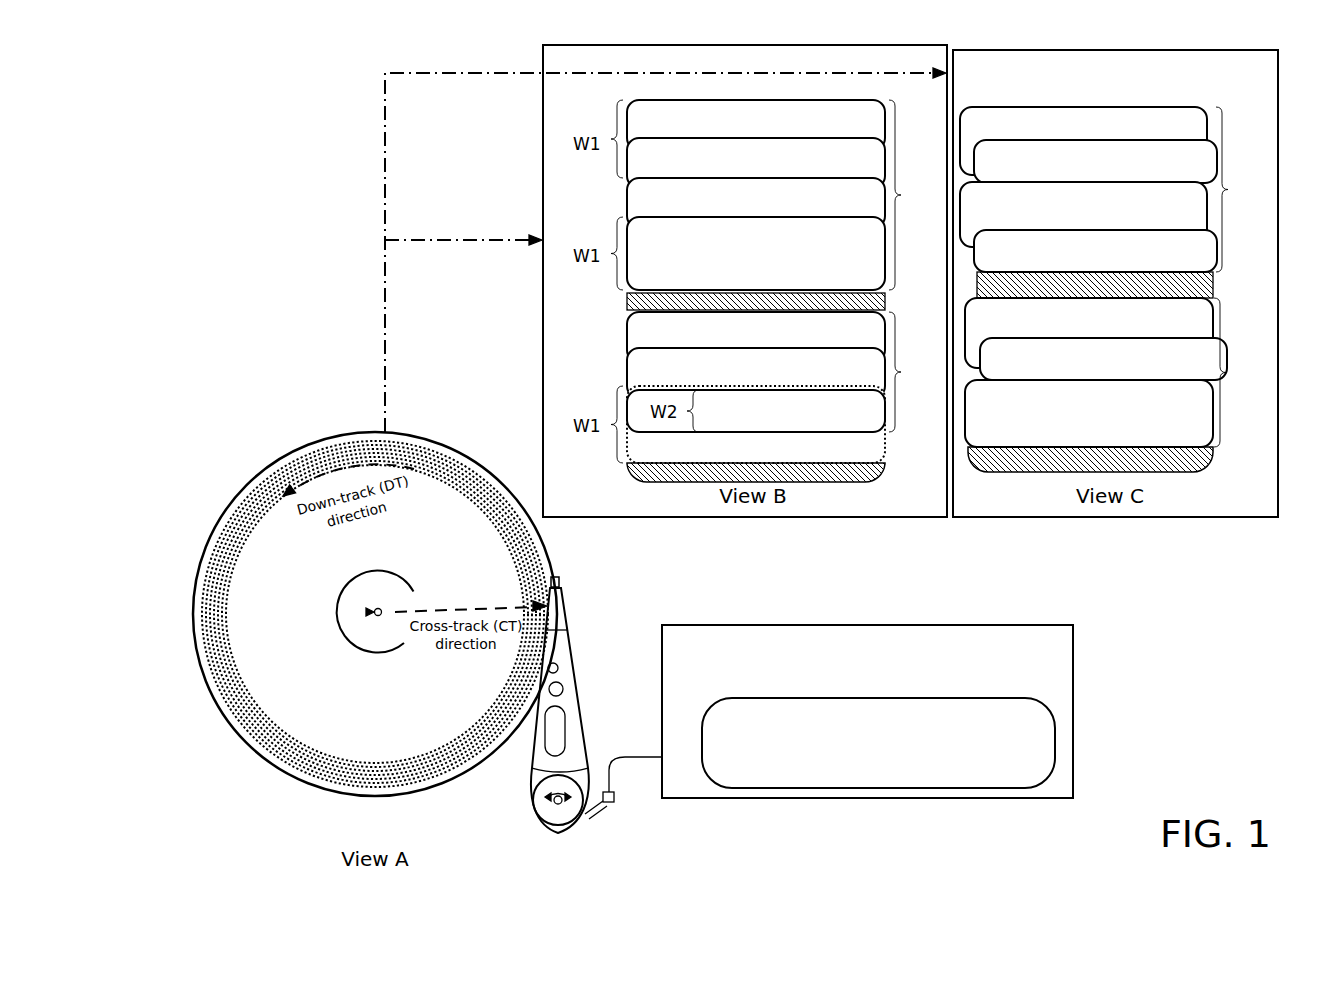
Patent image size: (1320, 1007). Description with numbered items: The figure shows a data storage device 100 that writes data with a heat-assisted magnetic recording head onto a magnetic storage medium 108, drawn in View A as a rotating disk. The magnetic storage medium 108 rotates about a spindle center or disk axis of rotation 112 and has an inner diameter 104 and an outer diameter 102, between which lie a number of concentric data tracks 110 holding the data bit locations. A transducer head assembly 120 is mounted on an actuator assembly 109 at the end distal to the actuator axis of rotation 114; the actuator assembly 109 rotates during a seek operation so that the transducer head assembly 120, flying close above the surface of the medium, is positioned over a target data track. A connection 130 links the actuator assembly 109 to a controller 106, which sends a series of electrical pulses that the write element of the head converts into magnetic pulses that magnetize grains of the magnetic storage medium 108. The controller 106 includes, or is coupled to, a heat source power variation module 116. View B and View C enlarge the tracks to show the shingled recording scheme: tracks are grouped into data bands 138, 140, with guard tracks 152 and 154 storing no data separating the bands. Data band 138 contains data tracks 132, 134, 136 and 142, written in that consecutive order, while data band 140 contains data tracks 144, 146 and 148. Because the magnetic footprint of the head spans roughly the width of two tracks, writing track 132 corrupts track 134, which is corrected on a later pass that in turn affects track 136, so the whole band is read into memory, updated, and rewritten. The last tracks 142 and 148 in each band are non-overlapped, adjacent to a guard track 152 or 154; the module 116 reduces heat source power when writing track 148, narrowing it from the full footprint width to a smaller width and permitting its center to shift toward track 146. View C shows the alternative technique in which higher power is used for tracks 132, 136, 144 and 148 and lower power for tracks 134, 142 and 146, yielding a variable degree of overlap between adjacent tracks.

The data storage device 100 is at (298, 176).
The outer diameter 102 is at (230, 526).
The inner diameter 104 is at (337, 618).
The controller 106 is at (851, 679).
The magnetic storage medium 108 is at (270, 764).
The actuator assembly 109 is at (572, 698).
The concentric data tracks 110 is at (292, 458).
The disk axis of rotation 112 is at (381, 614).
The actuator axis of rotation 114 is at (536, 806).
The heat source power variation module 116 is at (861, 765).
The transducer head assembly 120 is at (559, 584).
The flex cable connector 130 is at (590, 822).
The data track 132 is at (741, 131).
The data track 134 is at (741, 169).
The data track 136 is at (741, 208).
The data band 138 is at (1079, 195).
The data band 140 is at (1078, 372).
The data track 142 is at (741, 258).
The data track 144 is at (741, 341).
The data track 146 is at (741, 383).
The data track 148 is at (741, 417).
The guard track 152 is at (848, 301).
The guard track 154 is at (832, 477).